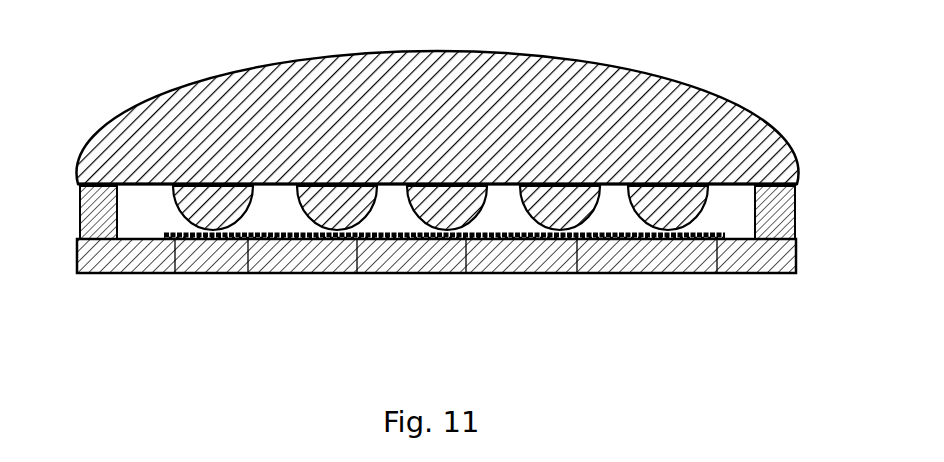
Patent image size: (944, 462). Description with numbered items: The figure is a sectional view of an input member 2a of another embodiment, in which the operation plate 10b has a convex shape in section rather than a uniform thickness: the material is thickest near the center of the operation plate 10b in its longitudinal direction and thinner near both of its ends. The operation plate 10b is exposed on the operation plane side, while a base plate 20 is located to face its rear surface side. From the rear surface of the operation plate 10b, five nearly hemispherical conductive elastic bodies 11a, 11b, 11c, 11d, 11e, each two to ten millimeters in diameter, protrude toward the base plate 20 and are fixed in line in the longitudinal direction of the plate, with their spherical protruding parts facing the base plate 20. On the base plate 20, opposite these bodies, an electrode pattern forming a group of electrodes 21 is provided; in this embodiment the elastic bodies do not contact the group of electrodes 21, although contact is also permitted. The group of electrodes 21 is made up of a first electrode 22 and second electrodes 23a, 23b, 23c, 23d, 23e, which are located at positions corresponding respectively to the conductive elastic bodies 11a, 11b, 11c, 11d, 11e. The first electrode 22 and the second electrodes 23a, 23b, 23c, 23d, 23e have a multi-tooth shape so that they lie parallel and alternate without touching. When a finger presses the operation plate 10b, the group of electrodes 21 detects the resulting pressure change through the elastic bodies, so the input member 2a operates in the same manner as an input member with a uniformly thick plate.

The input member 2a is at (455, 206).
The operation plate 10b is at (212, 103).
The conductive elastic body 11a is at (160, 184).
The conductive elastic body 11b is at (302, 184).
The conductive elastic body 11c is at (418, 184).
The conductive elastic body 11d is at (550, 184).
The conductive elastic body 11e is at (645, 184).
The base plate 20 is at (142, 274).
The group of electrodes 21 is at (460, 303).
The first electrode 22 is at (175, 273).
The second electrode 23a is at (248, 273).
The second electrode 23b is at (357, 273).
The second electrode 23c is at (466, 273).
The second electrode 23d is at (577, 273).
The second electrode 23e is at (714, 273).